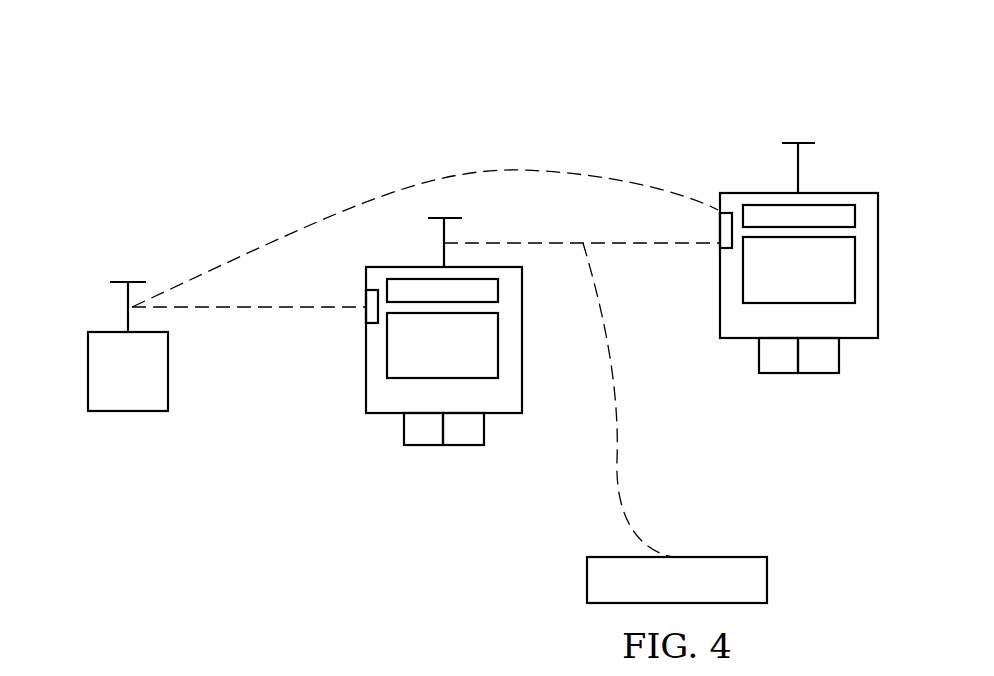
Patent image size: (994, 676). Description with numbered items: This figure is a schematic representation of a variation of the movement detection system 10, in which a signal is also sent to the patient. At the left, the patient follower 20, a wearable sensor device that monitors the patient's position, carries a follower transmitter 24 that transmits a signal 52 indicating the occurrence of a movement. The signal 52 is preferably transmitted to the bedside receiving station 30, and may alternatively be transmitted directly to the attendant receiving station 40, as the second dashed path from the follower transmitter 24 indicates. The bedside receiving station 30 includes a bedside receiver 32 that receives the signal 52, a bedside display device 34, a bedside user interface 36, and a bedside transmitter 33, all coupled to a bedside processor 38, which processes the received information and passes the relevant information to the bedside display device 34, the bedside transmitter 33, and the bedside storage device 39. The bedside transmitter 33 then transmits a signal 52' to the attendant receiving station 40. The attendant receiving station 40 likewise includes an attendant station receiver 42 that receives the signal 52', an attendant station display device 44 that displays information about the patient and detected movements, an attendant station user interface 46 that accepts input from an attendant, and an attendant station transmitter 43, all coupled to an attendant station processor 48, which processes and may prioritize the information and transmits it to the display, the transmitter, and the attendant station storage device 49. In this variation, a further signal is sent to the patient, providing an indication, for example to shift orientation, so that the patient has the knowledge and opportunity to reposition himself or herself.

The movement detection system 10 is at (310, 116).
The patient follower 20 is at (86, 388).
The follower transmitter 24 is at (122, 280).
The bedside receiving station 30 is at (364, 386).
The bedside receiver 32 is at (362, 296).
The bedside transmitter 33 is at (437, 215).
The bedside display device 34 is at (501, 286).
The bedside user interface 36 is at (501, 342).
The bedside processor 38 is at (402, 428).
The bedside storage device 39 is at (486, 428).
The attendant receiving station 40 is at (718, 310).
The attendant station receiver 42 is at (716, 232).
The attendant station transmitter 43 is at (811, 141).
The attendant station display device 44 is at (858, 213).
The attendant station user interface 46 is at (858, 268).
The attendant station processor 48 is at (757, 355).
The attendant station storage device 49 is at (842, 355).
The signal 52 is at (425, 275).
The signal 52' is at (582, 279).